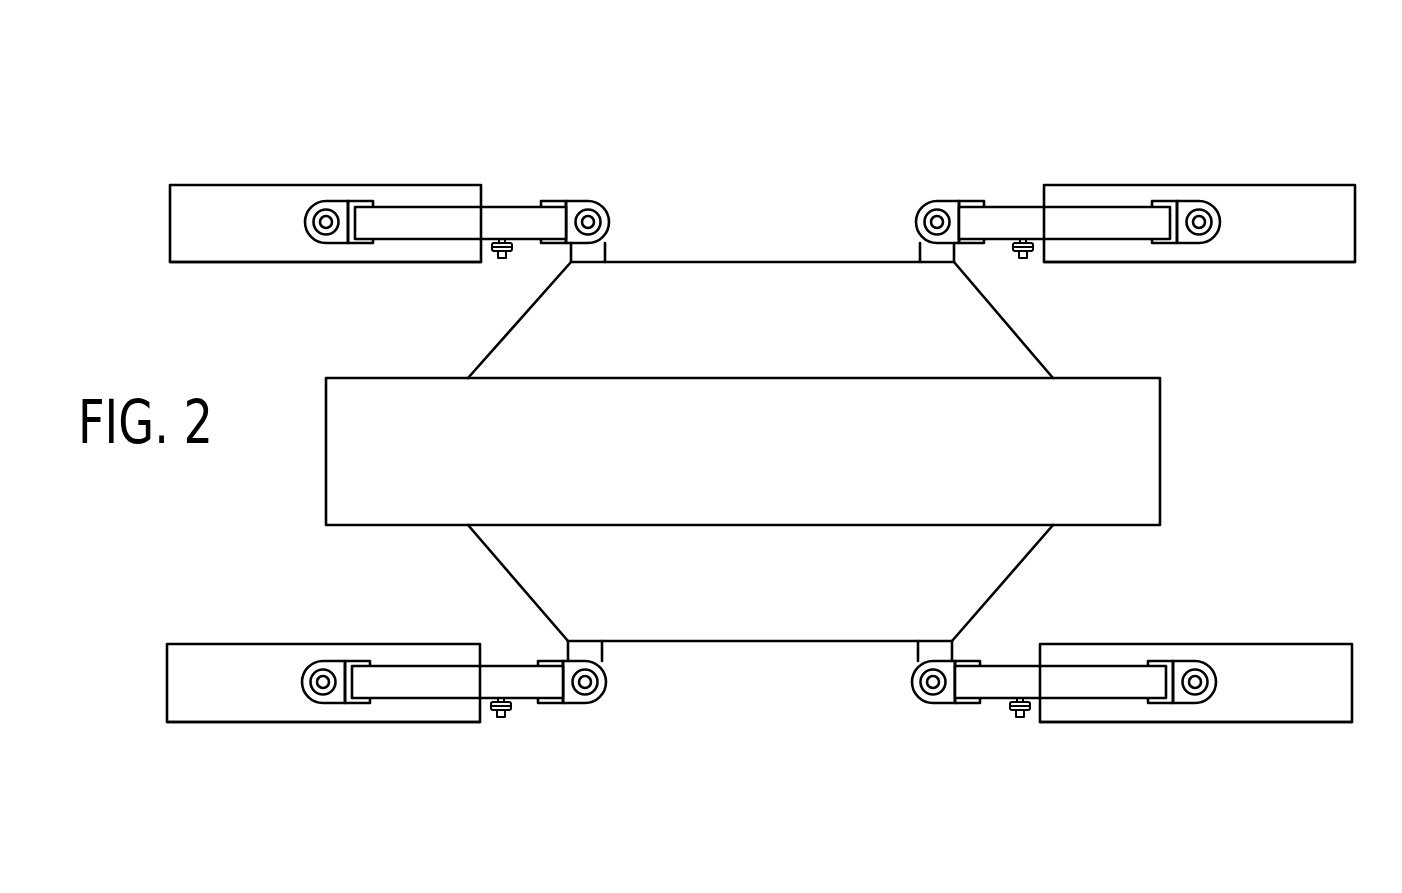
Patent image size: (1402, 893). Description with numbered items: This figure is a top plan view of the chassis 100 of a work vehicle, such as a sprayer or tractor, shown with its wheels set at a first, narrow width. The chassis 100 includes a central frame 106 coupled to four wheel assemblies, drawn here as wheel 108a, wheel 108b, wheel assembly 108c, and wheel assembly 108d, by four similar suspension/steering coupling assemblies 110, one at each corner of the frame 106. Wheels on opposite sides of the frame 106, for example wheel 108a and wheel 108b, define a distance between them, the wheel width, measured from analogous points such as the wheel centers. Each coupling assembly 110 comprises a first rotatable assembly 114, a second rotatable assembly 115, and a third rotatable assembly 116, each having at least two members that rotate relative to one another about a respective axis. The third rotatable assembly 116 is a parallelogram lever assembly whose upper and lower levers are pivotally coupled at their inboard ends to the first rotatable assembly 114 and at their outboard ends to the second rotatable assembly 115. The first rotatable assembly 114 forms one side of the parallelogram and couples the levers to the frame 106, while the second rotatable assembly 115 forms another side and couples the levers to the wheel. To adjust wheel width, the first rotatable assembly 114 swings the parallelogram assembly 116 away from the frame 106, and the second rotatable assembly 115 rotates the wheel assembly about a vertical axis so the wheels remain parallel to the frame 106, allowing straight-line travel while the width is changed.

The chassis 100 is at (927, 143).
The frame 106 is at (812, 465).
The wheel 108a is at (225, 183).
The wheel 108b is at (233, 640).
The wheel assembly 108c is at (1213, 178).
The wheel assembly 108d is at (1207, 640).
The suspension/steering coupling assembly 110 is at (512, 183).
The first rotatable assembly 114 is at (593, 190).
The second rotatable assembly 115 is at (388, 268).
The third rotatable assembly 116 is at (442, 162).